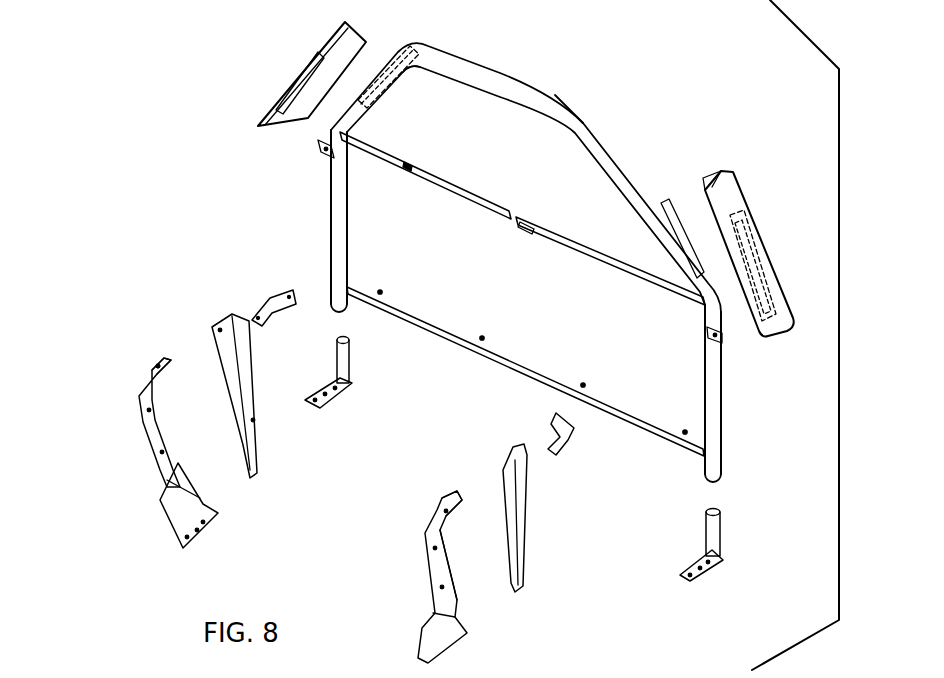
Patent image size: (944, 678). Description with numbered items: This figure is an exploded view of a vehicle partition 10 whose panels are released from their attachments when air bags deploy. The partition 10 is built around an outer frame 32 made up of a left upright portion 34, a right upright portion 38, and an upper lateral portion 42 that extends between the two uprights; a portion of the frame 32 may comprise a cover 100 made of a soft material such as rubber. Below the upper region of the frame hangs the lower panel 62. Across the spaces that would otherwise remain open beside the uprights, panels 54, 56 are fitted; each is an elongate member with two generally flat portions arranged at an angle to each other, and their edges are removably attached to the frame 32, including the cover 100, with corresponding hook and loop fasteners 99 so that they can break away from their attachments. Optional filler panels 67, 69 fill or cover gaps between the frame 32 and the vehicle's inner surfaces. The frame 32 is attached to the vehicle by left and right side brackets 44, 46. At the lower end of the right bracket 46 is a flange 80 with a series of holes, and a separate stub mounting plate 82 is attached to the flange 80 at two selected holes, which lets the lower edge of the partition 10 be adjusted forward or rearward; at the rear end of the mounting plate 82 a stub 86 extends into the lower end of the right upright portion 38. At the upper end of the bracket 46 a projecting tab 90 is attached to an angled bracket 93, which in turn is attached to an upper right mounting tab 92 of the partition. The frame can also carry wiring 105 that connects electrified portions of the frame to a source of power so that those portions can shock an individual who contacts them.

The partition 10 is at (205, 118).
The outer frame 32 is at (640, 200).
The left upright portion 34 is at (720, 407).
The right upright portion 38 is at (337, 210).
The upper lateral portion 42 is at (447, 77).
The left side bracket 44 is at (457, 640).
The right side bracket 46 is at (157, 357).
The panel 54 is at (737, 197).
The panel 56 is at (293, 63).
The lower panel 62 is at (505, 208).
The filler panel 67 is at (523, 577).
The filler panel 69 is at (223, 320).
The flange 80 is at (207, 527).
The stub mounting plate 82 is at (333, 400).
The stub 86 is at (345, 360).
The projecting tab 90 is at (162, 367).
The upper right mounting tab 92 is at (318, 152).
The angled bracket 93 is at (277, 292).
The hook and loop fasteners 99 is at (387, 53).
The cover 100 is at (575, 125).
The wiring 105 is at (718, 442).